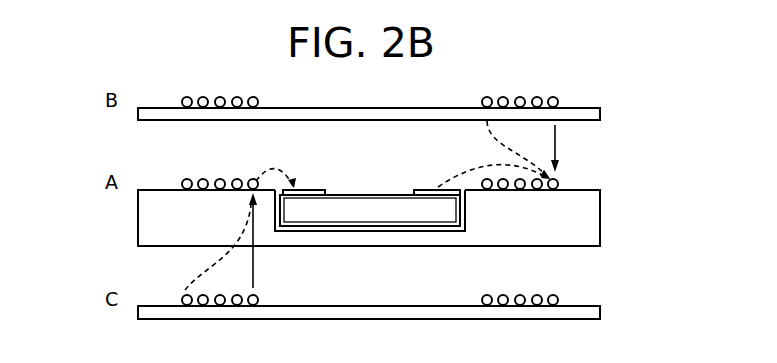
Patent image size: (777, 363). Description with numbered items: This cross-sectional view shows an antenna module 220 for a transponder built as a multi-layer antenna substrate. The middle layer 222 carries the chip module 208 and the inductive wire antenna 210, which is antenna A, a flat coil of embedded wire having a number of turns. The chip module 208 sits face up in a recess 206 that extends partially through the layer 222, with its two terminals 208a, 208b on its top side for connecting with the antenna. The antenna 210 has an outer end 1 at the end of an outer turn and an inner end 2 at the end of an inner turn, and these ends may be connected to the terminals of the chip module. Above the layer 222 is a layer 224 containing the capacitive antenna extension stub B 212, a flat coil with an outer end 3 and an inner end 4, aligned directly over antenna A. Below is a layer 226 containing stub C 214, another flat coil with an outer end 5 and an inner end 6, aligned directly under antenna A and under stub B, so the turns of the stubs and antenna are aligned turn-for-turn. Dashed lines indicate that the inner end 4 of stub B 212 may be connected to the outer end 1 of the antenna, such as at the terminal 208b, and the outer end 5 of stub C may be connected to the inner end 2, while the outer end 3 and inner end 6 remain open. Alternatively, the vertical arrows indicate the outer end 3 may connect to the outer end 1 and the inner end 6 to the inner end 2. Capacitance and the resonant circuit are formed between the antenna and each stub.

The antenna module 220 is at (110, 50).
The layer 224 is at (600, 113).
The layer 222 is at (600, 218).
The layer 226 is at (600, 313).
The stub B 212 is at (219, 90).
The inductive wire antenna 210 is at (219, 174).
The stub C 214 is at (506, 288).
The recess 206 is at (465, 220).
The chip module 208 is at (370, 210).
The terminal 208a is at (312, 190).
The terminal 208b is at (435, 190).
The outer end 1 is at (560, 176).
The inner end 2 is at (250, 175).
The outer end 3 is at (553, 88).
The inner end 4 is at (482, 88).
The outer end 5 is at (176, 291).
The inner end 6 is at (260, 291).